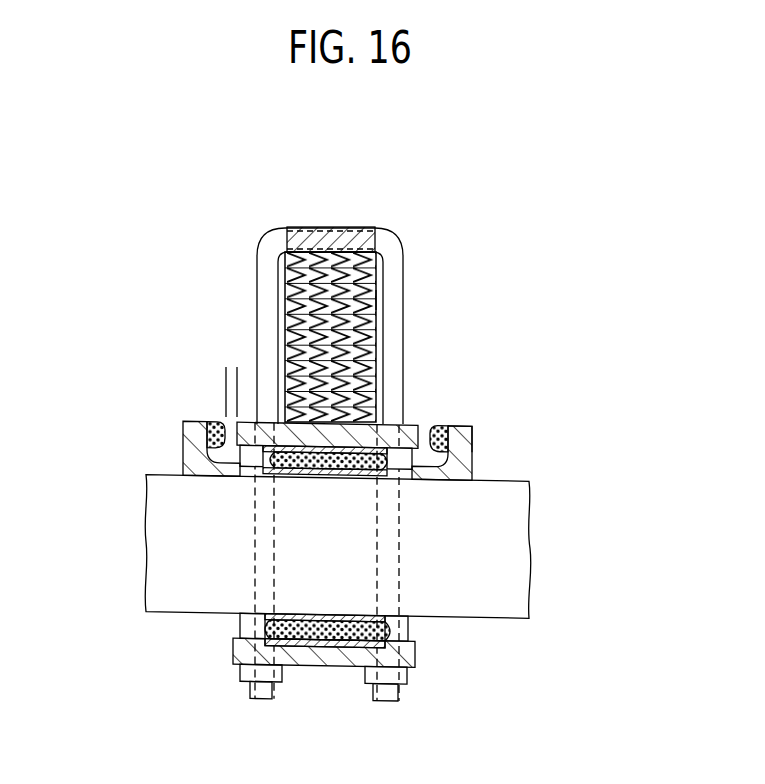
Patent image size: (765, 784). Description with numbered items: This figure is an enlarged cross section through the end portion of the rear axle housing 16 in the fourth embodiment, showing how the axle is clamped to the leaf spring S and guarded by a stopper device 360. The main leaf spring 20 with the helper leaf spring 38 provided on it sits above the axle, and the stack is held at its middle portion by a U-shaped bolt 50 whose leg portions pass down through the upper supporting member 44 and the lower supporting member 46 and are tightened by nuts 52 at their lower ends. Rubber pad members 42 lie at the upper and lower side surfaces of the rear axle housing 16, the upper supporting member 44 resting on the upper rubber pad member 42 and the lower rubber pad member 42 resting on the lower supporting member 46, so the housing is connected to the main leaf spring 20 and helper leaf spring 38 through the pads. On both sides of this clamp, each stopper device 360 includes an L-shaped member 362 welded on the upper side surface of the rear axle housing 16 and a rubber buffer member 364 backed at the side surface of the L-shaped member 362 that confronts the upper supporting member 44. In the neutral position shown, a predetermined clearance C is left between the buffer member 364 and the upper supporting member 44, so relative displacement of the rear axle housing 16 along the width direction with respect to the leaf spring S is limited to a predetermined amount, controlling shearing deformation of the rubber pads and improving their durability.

The rear axle housing 16 is at (523, 507).
The main leaf spring 20 is at (384, 372).
The helper leaf spring 38 is at (272, 277).
The rubber pad member 42 is at (354, 423).
The upper supporting member 44 is at (284, 393).
The lower supporting member 46 is at (232, 657).
The U-shaped bolt 50 is at (392, 265).
The nut 52 is at (405, 677).
The stopper device 360 is at (177, 458).
The L-shaped member 362 is at (470, 438).
The rubber buffer member 364 is at (437, 430).
The leaf spring S is at (386, 299).
The clearance C is at (253, 383).